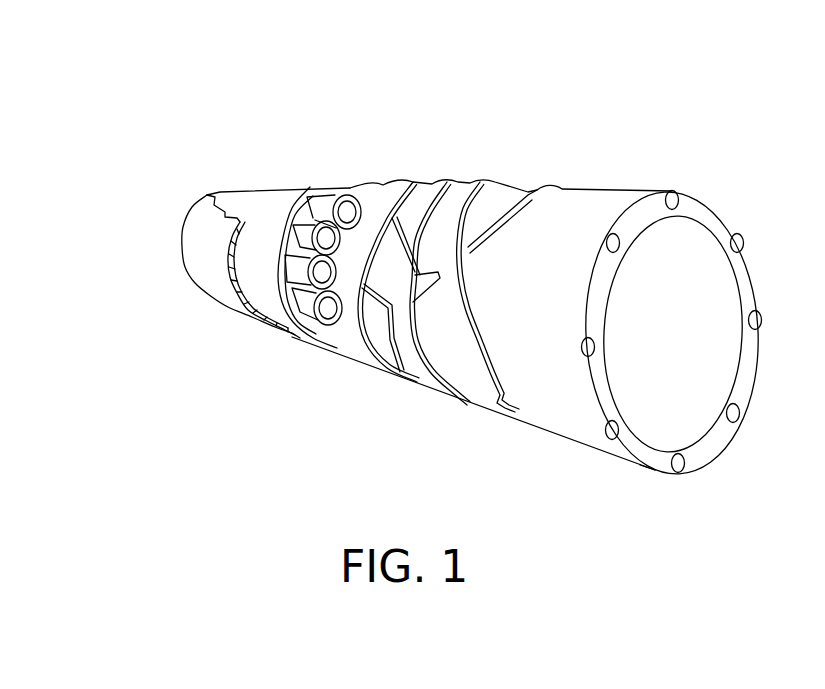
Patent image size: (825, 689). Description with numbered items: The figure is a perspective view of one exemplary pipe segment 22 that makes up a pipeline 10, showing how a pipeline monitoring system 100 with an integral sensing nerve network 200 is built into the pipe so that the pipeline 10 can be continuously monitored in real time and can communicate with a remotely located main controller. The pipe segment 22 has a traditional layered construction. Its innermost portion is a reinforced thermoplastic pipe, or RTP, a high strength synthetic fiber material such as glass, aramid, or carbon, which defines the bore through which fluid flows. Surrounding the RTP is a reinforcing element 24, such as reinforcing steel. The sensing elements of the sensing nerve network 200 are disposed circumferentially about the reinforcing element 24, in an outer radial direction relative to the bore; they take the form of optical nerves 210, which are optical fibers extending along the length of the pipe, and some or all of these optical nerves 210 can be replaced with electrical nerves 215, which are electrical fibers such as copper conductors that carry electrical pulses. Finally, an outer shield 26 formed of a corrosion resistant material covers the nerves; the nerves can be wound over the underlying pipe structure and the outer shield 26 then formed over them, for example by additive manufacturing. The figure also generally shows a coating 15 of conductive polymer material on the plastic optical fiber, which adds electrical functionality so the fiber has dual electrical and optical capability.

The pipeline monitoring system 100 is at (447, 117).
The pipeline 10 is at (482, 168).
The coating 15 is at (235, 308).
The pipe segment 22 is at (703, 197).
The reinforcing element 24 is at (422, 382).
The outer shield 26 is at (283, 187).
The sensing nerve network 200 is at (337, 178).
The optical nerves 210 is at (287, 223).
The electrical nerves 215 is at (261, 275).
The reinforced thermoplastic pipe RTP is at (577, 440).